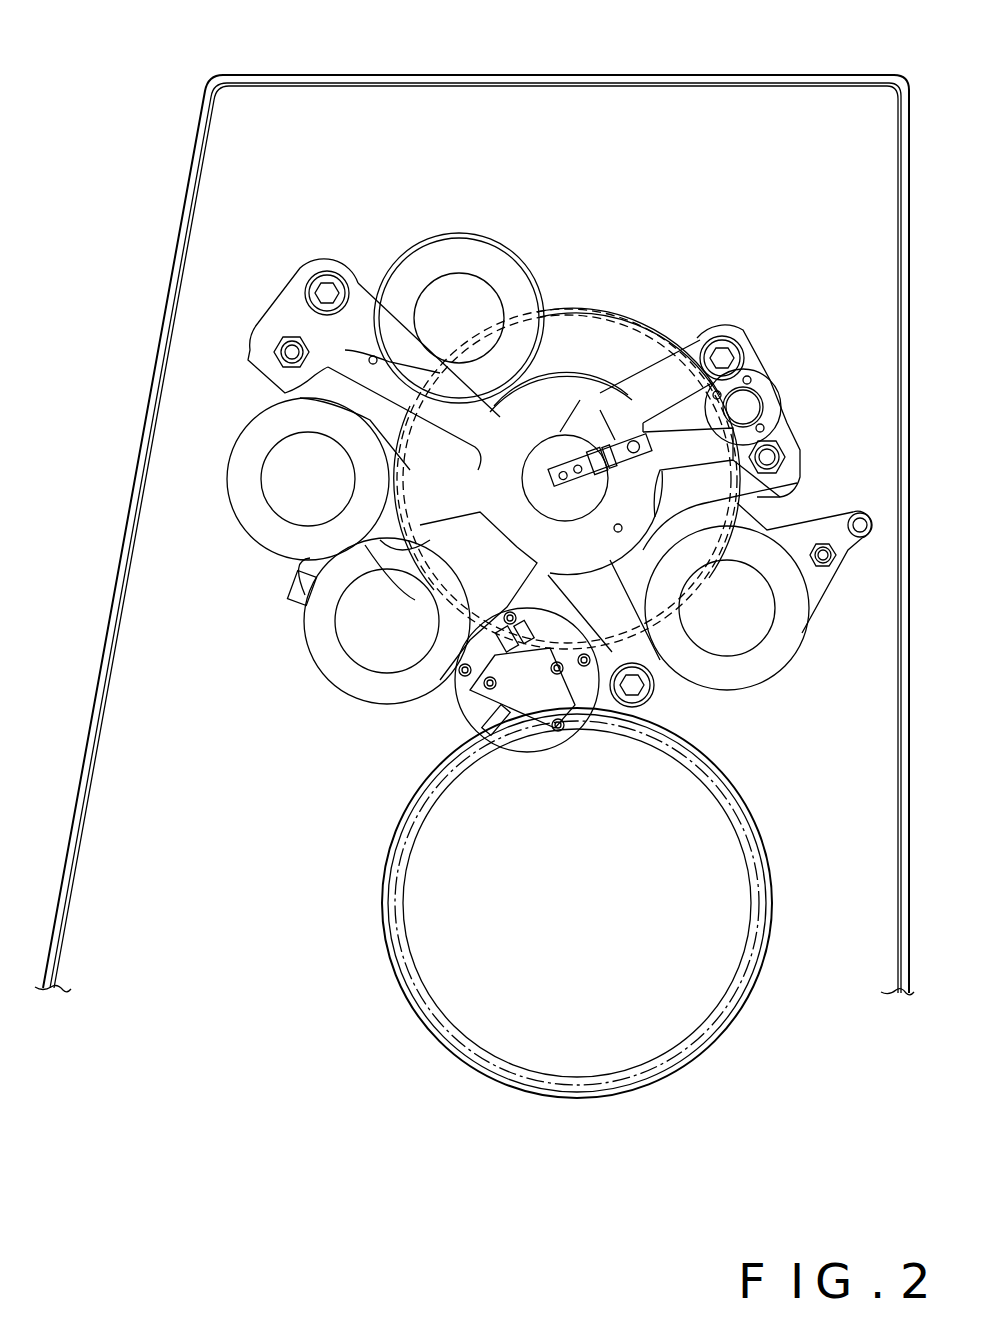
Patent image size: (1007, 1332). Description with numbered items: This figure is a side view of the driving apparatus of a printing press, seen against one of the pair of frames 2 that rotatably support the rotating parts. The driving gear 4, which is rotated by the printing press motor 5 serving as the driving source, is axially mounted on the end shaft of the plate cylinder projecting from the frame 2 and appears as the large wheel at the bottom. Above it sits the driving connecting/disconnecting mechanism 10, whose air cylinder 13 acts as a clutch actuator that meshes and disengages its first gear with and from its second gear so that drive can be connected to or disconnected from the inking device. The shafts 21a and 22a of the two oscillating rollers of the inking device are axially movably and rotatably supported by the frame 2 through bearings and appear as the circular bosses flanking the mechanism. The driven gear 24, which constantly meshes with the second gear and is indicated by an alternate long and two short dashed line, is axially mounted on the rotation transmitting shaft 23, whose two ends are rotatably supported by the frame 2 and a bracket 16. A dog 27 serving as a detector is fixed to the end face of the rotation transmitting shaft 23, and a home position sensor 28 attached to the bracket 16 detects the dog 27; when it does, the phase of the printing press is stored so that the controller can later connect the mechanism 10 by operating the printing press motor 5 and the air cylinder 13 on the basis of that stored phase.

The frame 2 is at (748, 75).
The driving gear 4 is at (462, 1063).
The printing press motor 5 is at (628, 1071).
The driving connecting/disconnecting mechanism 10 is at (436, 724).
The air cylinder 13 is at (538, 716).
The bracket 16 is at (587, 385).
The shaft 21a is at (730, 658).
The shaft 22a is at (460, 272).
The rotation transmitting shaft 23 is at (567, 505).
The driven gear 24 is at (645, 332).
The dog 27 is at (572, 462).
The home position sensor 28 is at (590, 462).